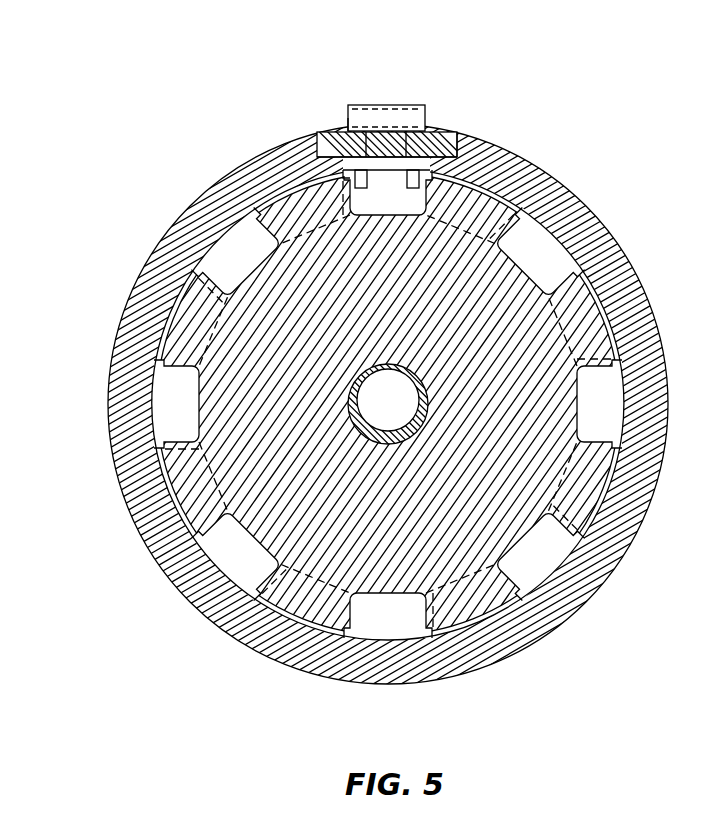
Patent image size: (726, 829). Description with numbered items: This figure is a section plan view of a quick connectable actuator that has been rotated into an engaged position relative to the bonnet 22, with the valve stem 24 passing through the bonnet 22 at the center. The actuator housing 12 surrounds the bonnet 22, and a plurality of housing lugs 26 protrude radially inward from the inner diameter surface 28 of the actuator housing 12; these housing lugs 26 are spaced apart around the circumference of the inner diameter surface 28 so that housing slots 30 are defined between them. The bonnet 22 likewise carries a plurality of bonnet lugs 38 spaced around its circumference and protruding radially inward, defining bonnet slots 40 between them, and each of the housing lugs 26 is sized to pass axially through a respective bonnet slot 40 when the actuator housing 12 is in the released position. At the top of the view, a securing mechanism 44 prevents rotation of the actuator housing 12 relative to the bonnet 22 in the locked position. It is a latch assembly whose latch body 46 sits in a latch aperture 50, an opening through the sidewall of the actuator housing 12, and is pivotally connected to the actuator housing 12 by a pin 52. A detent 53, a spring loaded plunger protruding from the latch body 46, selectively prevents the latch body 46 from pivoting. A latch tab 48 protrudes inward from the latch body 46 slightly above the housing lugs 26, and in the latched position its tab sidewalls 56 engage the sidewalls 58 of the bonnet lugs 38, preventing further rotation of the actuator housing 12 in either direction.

The actuator housing 12 is at (282, 647).
The bonnet 22 is at (233, 327).
The valve stem 24 is at (388, 404).
The housing lugs 26 is at (603, 315).
The inner diameter surface 28 is at (622, 398).
The housing slots 30 is at (397, 642).
The bonnet lugs 38 is at (247, 579).
The bonnet slots 40 is at (516, 548).
The securing mechanism 44 is at (363, 401).
The latch body 46 is at (373, 117).
The latch tab 48 is at (460, 163).
The latch aperture 50 is at (420, 138).
The pin 52 is at (342, 143).
The detent 53 is at (346, 121).
The tab sidewalls 56 is at (330, 158).
The sidewalls of bonnet lugs 58 is at (218, 296).